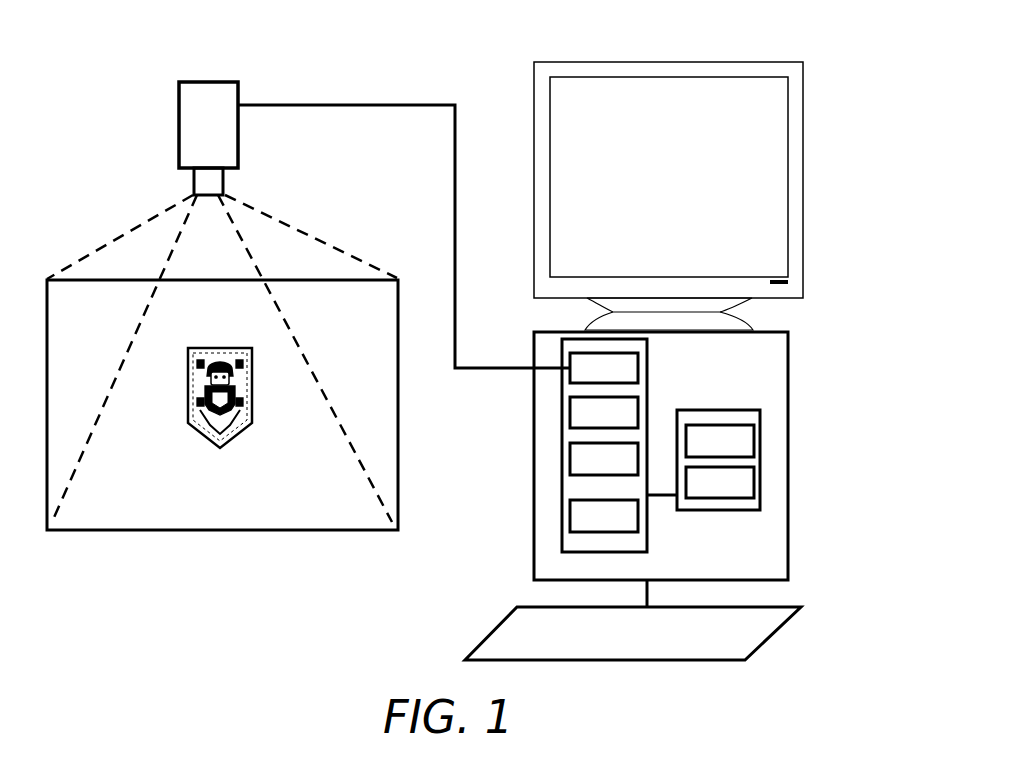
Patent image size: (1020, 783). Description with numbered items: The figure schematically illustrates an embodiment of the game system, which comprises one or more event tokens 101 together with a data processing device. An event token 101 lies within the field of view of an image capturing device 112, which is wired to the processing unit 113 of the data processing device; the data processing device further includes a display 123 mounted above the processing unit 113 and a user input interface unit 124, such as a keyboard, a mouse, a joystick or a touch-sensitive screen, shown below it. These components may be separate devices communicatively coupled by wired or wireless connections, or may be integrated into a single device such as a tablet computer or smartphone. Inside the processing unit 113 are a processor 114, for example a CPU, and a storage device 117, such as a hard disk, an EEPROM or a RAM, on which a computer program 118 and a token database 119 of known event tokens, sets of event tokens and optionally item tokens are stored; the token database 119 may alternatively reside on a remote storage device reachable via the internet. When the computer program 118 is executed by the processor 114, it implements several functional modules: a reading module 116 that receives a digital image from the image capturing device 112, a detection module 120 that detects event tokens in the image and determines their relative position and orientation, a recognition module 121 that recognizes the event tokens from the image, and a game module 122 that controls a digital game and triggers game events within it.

The event token 101 is at (208, 438).
The image capturing device 112 is at (177, 127).
The processing unit 113 is at (790, 453).
The processor 114 is at (603, 553).
The reading module 116 is at (593, 352).
The storage device 117 is at (703, 510).
The computer program 118 is at (720, 425).
The token database 119 is at (745, 498).
The detection module 120 is at (570, 418).
The recognition module 121 is at (570, 459).
The game module 122 is at (570, 514).
The display 123 is at (630, 62).
The user input interface unit 124 is at (770, 643).